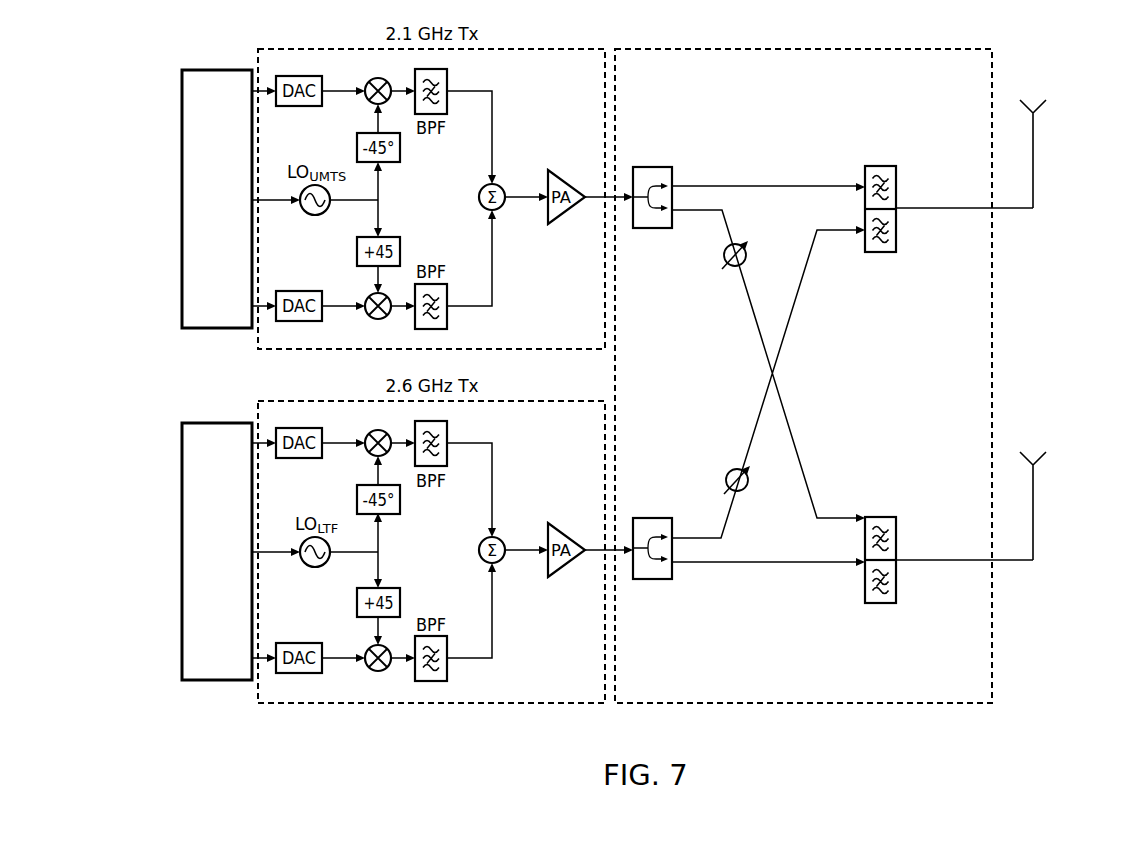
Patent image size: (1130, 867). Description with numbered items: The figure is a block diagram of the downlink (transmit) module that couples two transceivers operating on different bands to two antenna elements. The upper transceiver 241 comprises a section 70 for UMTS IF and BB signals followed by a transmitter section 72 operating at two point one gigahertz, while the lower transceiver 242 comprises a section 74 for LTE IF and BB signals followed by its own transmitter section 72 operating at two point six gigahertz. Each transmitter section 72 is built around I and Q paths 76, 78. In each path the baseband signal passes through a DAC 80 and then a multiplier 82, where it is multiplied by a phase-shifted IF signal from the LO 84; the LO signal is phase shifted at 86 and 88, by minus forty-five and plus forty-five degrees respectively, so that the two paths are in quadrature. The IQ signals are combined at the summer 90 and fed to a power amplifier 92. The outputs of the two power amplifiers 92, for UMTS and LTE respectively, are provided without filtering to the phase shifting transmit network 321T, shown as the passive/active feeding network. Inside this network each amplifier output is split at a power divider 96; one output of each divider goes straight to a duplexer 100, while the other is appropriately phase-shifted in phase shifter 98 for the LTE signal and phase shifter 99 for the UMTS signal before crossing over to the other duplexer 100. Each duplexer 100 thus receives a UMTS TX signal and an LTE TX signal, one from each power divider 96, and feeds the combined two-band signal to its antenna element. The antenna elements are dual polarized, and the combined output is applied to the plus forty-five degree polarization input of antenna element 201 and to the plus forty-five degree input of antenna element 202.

The UMTS IF and BB section 70 is at (222, 70).
The transceiver 241 is at (192, 70).
The transmitter section 72 is at (300, 49).
The LTE IF and BB section 74 is at (222, 680).
The transceiver 242 is at (192, 680).
The I path 76 is at (492, 108).
The Q path 78 is at (492, 292).
The DAC 80 is at (298, 458).
The multiplier 82 is at (376, 671).
The LO 84 is at (309, 214).
The phase shifter 86 is at (400, 151).
The phase shifter 88 is at (400, 247).
The combiner 90 is at (500, 560).
The power amplifier 92 is at (570, 577).
The power divider 96 is at (656, 228).
The phase shifter 98 is at (748, 491).
The phase shifter 99 is at (744, 266).
The duplexer 100 is at (881, 252).
The antenna element 201 is at (1033, 168).
The antenna element 202 is at (1033, 518).
The phase shifting transmit network 321T is at (738, 50).